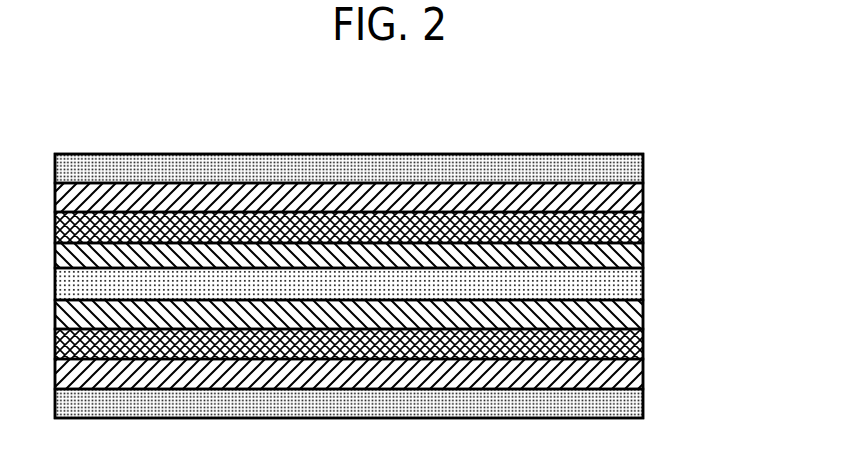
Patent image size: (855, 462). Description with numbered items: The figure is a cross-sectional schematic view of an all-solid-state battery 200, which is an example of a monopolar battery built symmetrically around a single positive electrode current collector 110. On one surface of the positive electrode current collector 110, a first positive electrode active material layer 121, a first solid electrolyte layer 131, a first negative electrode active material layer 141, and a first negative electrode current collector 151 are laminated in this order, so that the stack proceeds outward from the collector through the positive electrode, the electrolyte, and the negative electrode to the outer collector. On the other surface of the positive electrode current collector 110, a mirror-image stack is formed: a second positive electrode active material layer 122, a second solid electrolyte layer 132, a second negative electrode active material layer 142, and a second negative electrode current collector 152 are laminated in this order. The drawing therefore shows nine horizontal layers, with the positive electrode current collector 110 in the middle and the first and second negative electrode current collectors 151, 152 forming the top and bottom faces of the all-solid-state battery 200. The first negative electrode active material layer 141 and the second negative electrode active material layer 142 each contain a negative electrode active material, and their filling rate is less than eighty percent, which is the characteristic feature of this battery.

The all-solid-state battery 200 is at (388, 112).
The positive electrode current collector 110 is at (643, 289).
The first positive electrode active material layer 121 is at (643, 259).
The second positive electrode active material layer 122 is at (643, 318).
The first solid electrolyte layer 131 is at (643, 230).
The second solid electrolyte layer 132 is at (643, 348).
The first negative electrode active material layer 141 is at (643, 200).
The second negative electrode active material layer 142 is at (643, 377).
The first negative electrode current collector 151 is at (643, 172).
The second negative electrode current collector 152 is at (643, 406).